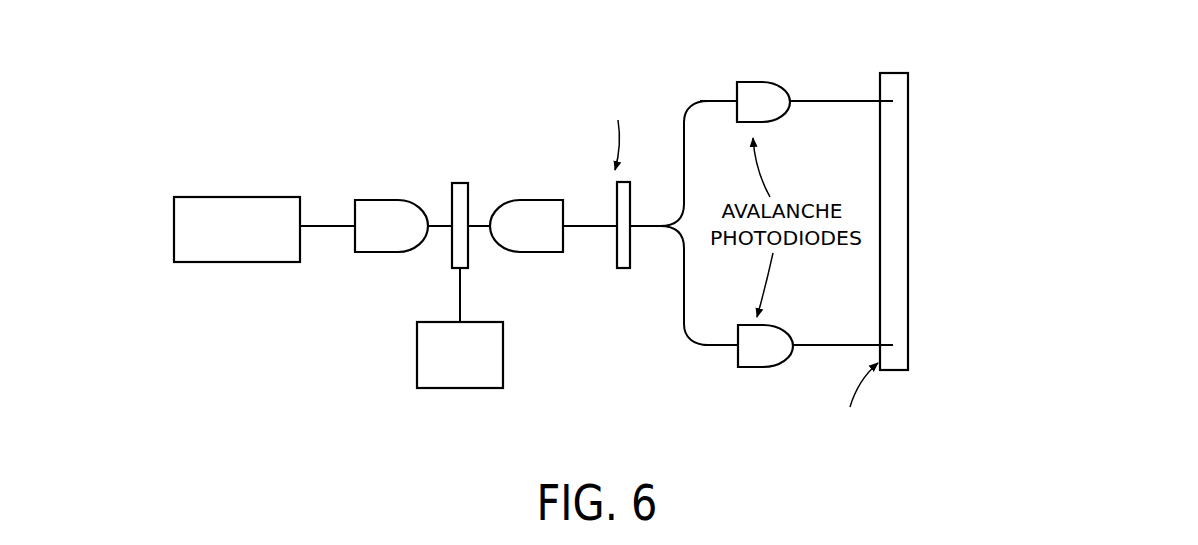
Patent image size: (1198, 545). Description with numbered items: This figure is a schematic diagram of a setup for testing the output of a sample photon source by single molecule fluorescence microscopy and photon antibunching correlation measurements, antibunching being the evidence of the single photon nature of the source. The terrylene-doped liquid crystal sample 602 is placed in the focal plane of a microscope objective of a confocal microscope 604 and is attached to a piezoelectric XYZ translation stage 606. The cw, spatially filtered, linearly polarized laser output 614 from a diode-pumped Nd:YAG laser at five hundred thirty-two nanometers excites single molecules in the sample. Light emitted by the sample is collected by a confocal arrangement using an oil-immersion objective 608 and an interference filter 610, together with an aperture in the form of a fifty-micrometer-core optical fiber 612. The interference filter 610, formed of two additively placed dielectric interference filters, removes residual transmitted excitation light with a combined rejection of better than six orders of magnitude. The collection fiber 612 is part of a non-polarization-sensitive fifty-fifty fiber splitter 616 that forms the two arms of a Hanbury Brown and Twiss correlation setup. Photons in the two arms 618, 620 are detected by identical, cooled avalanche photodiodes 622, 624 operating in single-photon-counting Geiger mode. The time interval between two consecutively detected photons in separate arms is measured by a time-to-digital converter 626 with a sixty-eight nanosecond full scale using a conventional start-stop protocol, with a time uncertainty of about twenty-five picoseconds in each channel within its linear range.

The terrylene-doped liquid crystal sample 602 is at (452, 262).
The microscope objective of a confocal microscope 604 is at (367, 200).
The XYZ translation stage 606 is at (417, 351).
The oil-immersion objective 608 is at (553, 200).
The interference filter 610 is at (617, 256).
The optical fiber 612 is at (646, 222).
The laser output 614 is at (207, 197).
The fiber splitter 616 is at (657, 262).
The Hanbury Brown and Twiss arm 618 is at (710, 70).
The Hanbury Brown and Twiss arm 620 is at (707, 346).
The avalanche photodiode 622 is at (773, 123).
The avalanche photodiode 624 is at (781, 325).
The time-to-digital converter 626 is at (926, 60).